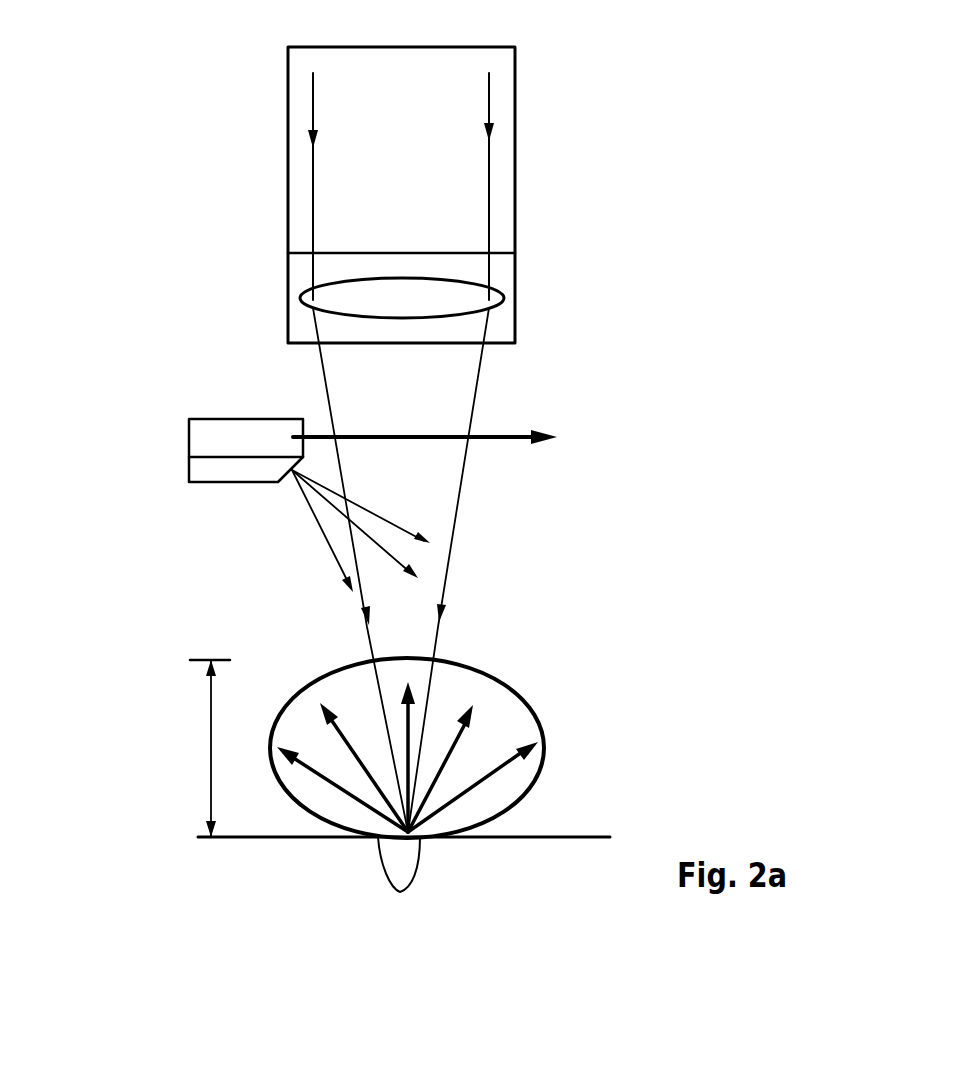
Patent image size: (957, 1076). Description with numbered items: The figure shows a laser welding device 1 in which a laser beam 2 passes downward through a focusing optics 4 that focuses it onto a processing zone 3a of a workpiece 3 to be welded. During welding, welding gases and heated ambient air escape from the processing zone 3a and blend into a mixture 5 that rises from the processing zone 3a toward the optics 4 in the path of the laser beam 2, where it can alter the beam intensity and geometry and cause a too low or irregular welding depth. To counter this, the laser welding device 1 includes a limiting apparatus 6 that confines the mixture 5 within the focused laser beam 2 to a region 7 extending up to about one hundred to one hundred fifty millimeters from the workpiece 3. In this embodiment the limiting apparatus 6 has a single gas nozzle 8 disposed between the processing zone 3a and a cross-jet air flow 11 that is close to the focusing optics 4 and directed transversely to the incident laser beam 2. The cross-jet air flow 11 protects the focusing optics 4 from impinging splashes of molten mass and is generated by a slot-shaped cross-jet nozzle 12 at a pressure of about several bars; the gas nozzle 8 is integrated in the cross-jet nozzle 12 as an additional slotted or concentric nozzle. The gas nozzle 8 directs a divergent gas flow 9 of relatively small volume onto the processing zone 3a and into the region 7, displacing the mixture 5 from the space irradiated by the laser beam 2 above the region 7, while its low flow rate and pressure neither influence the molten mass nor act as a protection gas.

The laser welding device 1 is at (730, 165).
The laser beam 2 is at (490, 162).
The workpiece 3 is at (580, 837).
The processing zone 3a is at (393, 853).
The focusing optics 4 is at (508, 273).
The mixture 5 is at (520, 692).
The limiting apparatus 6 is at (205, 425).
The region 7 is at (210, 753).
The gas nozzle 8 is at (207, 473).
The gas flow 9 is at (327, 527).
The cross-jet air flow 11 is at (510, 430).
The cross-jet nozzle 12 is at (219, 435).